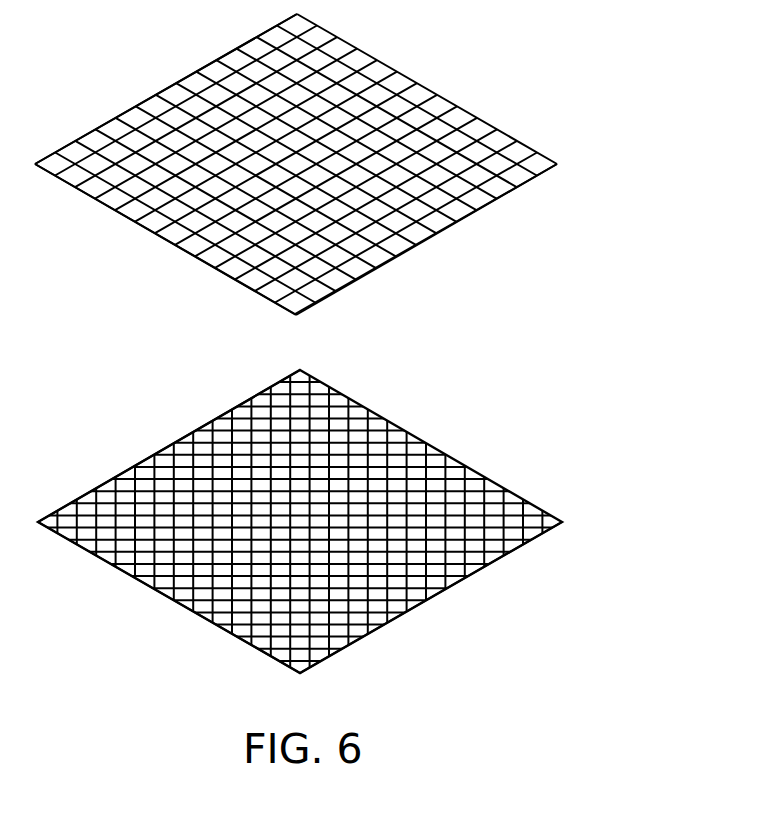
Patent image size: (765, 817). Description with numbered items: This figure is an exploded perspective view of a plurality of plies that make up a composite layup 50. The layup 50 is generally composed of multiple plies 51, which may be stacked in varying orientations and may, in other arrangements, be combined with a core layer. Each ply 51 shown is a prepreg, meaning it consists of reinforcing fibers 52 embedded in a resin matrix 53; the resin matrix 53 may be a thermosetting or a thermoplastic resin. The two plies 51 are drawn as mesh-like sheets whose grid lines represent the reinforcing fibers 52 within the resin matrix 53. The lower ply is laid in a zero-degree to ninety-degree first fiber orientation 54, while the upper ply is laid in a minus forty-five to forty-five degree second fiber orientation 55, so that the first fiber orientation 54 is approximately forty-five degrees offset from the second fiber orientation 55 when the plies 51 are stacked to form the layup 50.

The layup 50 is at (346, 341).
The ply 51 is at (472, 214).
The reinforcing fibers 52 is at (85, 146).
The resin matrix 53 is at (118, 188).
The first fiber orientation 54 is at (296, 162).
The second fiber orientation 55 is at (300, 521).